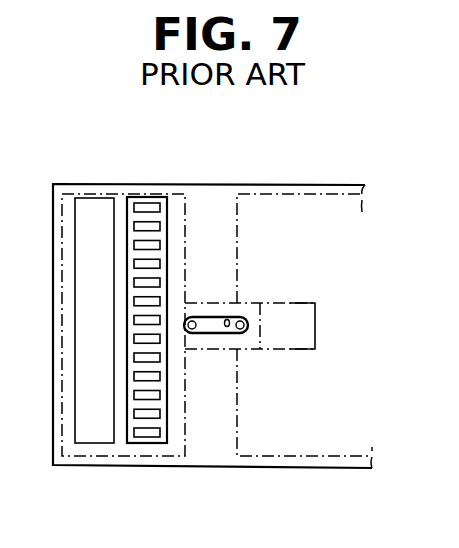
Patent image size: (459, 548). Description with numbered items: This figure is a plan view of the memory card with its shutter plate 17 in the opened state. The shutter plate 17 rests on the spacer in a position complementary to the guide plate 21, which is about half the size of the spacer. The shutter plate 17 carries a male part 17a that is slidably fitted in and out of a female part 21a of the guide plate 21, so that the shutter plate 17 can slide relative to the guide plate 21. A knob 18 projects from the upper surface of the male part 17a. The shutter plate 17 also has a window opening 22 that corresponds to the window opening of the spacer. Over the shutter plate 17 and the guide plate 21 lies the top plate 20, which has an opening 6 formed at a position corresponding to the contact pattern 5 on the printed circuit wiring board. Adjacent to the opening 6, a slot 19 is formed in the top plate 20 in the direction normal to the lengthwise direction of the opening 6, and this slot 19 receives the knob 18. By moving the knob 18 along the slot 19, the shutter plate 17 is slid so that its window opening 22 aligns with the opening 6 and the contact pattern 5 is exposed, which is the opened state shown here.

The contact pattern 5 is at (150, 434).
The opening 6 is at (131, 425).
The shutter plate 17 is at (174, 205).
The male part 17a is at (263, 337).
The knob 18 is at (240, 331).
The slot 19 is at (229, 320).
The top plate 20 is at (218, 183).
The guide plate 21 is at (324, 186).
The female part 21a is at (309, 320).
The window opening 22 is at (87, 202).